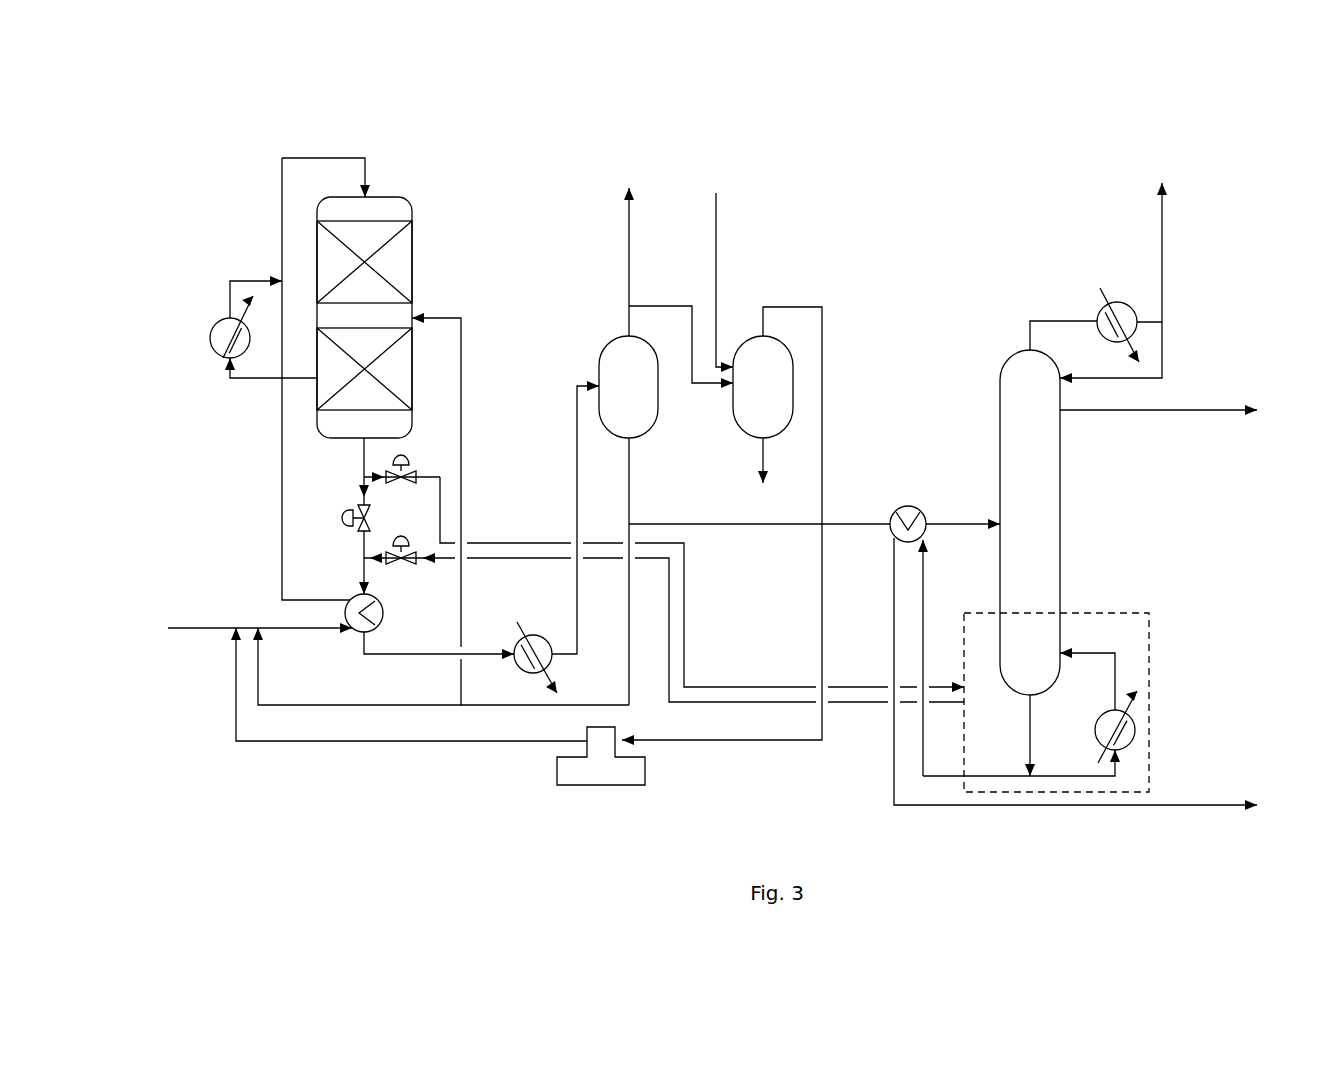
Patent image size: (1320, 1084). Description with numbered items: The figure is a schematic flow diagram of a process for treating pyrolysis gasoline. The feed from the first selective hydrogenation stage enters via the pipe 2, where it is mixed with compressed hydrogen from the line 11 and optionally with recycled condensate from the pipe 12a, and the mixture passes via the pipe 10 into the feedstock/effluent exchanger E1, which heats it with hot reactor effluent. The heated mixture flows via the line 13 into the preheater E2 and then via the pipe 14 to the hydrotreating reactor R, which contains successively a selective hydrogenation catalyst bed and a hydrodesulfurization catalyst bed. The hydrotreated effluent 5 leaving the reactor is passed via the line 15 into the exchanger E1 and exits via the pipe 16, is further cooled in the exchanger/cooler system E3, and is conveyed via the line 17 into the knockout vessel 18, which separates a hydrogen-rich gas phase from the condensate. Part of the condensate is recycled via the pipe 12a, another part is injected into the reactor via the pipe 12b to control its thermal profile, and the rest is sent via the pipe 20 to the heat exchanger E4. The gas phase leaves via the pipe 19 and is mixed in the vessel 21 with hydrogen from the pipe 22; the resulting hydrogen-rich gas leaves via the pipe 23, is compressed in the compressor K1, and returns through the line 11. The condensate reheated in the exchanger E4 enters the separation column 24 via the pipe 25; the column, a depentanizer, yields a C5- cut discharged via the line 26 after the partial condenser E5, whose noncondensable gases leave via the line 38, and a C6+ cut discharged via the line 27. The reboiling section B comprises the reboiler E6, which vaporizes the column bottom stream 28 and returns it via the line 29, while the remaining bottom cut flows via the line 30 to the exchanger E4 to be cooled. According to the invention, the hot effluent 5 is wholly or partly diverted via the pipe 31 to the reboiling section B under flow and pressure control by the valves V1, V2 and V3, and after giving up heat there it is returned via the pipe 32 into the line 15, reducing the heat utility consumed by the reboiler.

The hydrotreating reactor R is at (412, 225).
The pipe 14 is at (320, 158).
The line 13 is at (282, 500).
The preheater E2 is at (210, 338).
The hydrotreated effluent 5 is at (364, 455).
The valve V1 is at (349, 518).
The valve V2 is at (409, 457).
The valve V3 is at (401, 538).
The line 15 is at (364, 575).
The feedstock/effluent exchanger E1 is at (384, 610).
The pipe 2 is at (208, 628).
The pipe 10 is at (335, 628).
The line 11 is at (236, 685).
The pipe 12a is at (258, 685).
The pipe 12b is at (461, 400).
The pipe 16 is at (395, 654).
The exchanger/cooler system E3 is at (530, 628).
The line 17 is at (577, 480).
The knockout vessel 18 is at (645, 440).
The pipe 19 is at (665, 306).
The pipe 22 is at (716, 230).
The vessel 21 is at (733, 415).
The pipe 23 is at (822, 318).
The pipe 20 is at (755, 524).
The feedstock/effluent exchanger E4 is at (905, 505).
The pipe 25 is at (955, 520).
The separation column 24 is at (1060, 538).
The line 30 is at (923, 585).
The column bottom stream C6+ 28 is at (1075, 776).
The line 27 is at (1030, 735).
The line 29 is at (1075, 655).
The reboiler E6 is at (1135, 730).
The reboiling section B is at (1149, 622).
The partial condenser E5 is at (1110, 300).
The line 38 is at (1162, 232).
The line 26 is at (1183, 410).
The pipe 31 is at (865, 687).
The pipe 32 is at (862, 702).
The compressor K1 is at (645, 775).